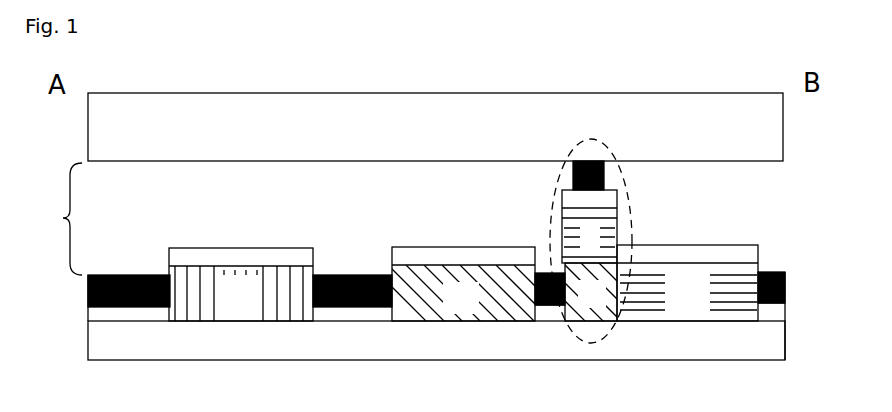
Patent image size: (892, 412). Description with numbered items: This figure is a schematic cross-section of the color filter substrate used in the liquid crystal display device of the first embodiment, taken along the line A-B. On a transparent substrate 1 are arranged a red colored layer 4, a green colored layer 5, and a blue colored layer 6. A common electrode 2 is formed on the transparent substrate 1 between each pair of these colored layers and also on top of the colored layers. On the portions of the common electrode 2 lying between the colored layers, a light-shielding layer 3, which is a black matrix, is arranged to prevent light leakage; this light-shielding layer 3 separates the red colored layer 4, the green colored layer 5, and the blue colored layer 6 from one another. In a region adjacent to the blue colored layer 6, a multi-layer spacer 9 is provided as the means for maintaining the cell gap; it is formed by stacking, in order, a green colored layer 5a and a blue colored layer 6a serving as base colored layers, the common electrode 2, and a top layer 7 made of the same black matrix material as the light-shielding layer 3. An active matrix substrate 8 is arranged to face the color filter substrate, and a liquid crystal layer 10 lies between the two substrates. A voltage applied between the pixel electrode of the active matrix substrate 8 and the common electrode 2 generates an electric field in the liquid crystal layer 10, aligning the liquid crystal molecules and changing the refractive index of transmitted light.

The transparent substrate 1 is at (782, 345).
The common electrode 2 is at (238, 259).
The light-shielding layer (black matrix) 3 is at (128, 275).
The red colored layer 4 is at (200, 312).
The green colored layer 5 is at (425, 312).
The green colored layer 5a is at (607, 310).
The blue colored layer 6 is at (738, 312).
The blue colored layer 6a is at (560, 220).
The top layer 7 is at (605, 175).
The active matrix substrate 8 is at (778, 125).
The multi-layer spacer 9 is at (588, 140).
The liquid crystal layer 10 is at (55, 219).